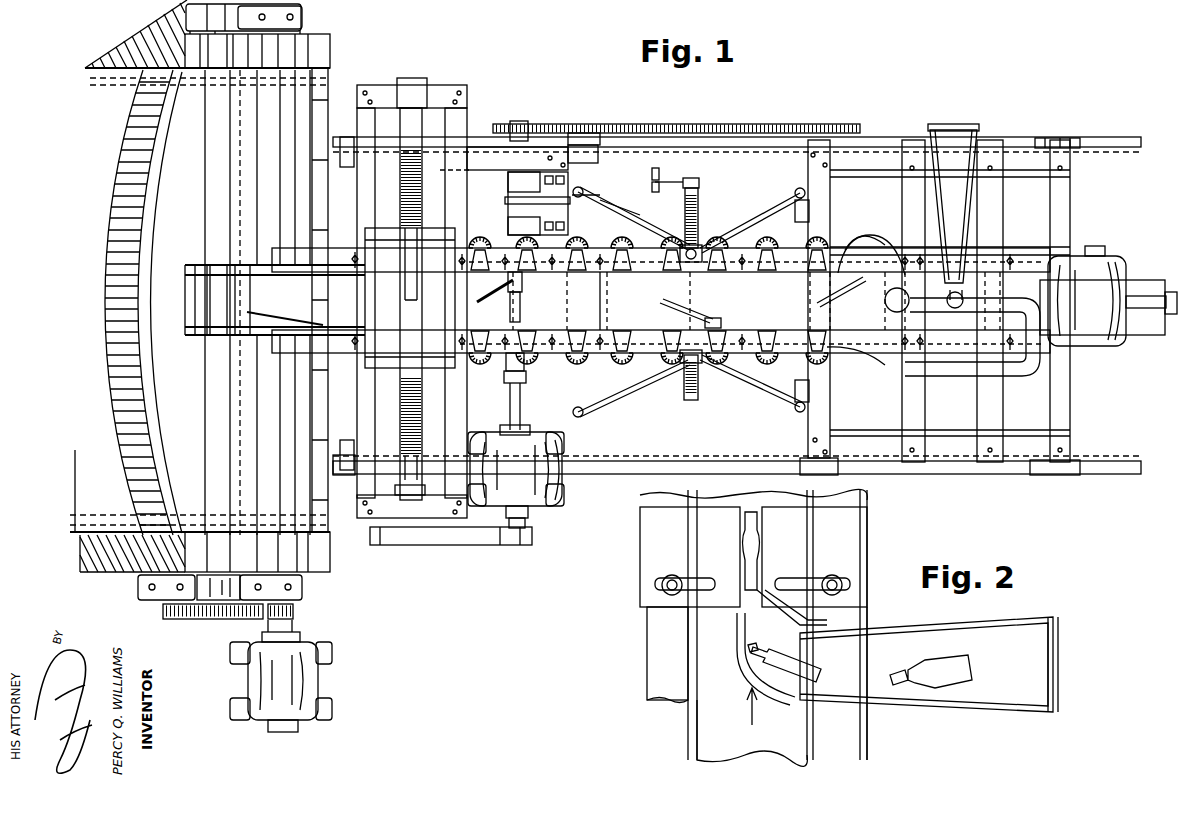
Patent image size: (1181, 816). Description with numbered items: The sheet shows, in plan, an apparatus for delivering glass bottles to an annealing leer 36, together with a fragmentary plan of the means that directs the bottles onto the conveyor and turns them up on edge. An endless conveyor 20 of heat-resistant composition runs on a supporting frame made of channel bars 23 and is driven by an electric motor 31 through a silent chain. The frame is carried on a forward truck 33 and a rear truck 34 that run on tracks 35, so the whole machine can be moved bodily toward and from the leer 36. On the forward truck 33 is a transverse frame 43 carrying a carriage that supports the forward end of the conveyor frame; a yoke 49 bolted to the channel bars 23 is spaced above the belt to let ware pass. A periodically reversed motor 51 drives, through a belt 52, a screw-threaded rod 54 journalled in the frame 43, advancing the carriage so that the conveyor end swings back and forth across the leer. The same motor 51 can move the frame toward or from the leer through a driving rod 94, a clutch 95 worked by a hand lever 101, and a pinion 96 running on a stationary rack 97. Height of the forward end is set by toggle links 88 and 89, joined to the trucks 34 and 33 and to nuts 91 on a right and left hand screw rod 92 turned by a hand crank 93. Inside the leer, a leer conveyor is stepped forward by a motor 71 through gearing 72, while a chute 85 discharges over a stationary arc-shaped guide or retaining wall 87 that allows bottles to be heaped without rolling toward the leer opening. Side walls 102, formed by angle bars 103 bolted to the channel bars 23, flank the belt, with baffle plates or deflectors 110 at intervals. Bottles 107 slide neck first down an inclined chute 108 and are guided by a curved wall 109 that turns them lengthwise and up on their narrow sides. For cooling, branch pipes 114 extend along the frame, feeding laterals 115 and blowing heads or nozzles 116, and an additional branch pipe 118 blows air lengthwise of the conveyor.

In FIG. 2, the endless conveyor 20 is at (710, 730).
In FIG. 2, the channel bars 23 is at (648, 653).
In FIG. 1, the electric motor 31 is at (1100, 280).
In FIG. 1, the forward truck 33 is at (480, 157).
In FIG. 1, the truck 34 is at (875, 145).
In FIG. 1, the tracks 35 is at (1085, 143).
In FIG. 1, the leer 36 is at (300, 47).
In FIG. 1, the frame 43 is at (455, 185).
In FIG. 1, the yoke 49 is at (382, 294).
In FIG. 1, the motor 51 is at (535, 488).
In FIG. 1, the belt 52 is at (470, 545).
In FIG. 1, the rod 54 is at (418, 410).
In FIG. 1, the motor 71 is at (318, 673).
In FIG. 1, the gearing 72 is at (215, 612).
In FIG. 1, the chute 85 is at (172, 262).
In FIG. 1, the arc-shaped guide or retaining wall 87 is at (115, 185).
In FIG. 1, the toggle link 88 is at (765, 232).
In FIG. 1, the toggle link 89 is at (655, 222).
In FIG. 1, the sleeves or nuts 91 is at (697, 375).
In FIG. 1, the right and left hand screw rod 92 is at (699, 218).
In FIG. 1, the hand crank 93 is at (660, 178).
In FIG. 1, the driving rod 94 is at (508, 312).
In FIG. 1, the clutch 95 is at (512, 207).
In FIG. 1, the pinion 96 is at (530, 128).
In FIG. 1, the stationary rack 97 is at (632, 128).
In FIG. 1, the hand lever 101 is at (588, 200).
In FIG. 1, the side walls 102 is at (755, 275).
In FIG. 2, the side walls 102 is at (650, 558).
In FIG. 1, the angle bars 103 is at (841, 255).
In FIG. 2, the bottles 107 is at (948, 662).
In FIG. 1, the inclined chute 108 is at (945, 207).
In FIG. 2, the inclined chute 108 is at (965, 710).
In FIG. 2, the curved wall 109 is at (750, 680).
In FIG. 1, the baffle plates or deflectors 110 is at (828, 290).
In FIG. 1, the branch pipes 114 is at (875, 245).
In FIG. 1, the laterals 115 is at (772, 240).
In FIG. 1, the blowing heads or nozzles 116 is at (668, 273).
In FIG. 1, the additional branch pipe 118 is at (980, 300).